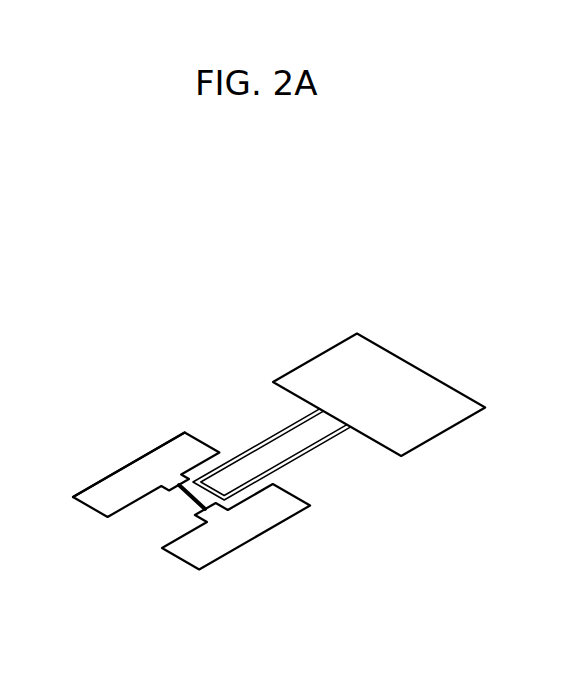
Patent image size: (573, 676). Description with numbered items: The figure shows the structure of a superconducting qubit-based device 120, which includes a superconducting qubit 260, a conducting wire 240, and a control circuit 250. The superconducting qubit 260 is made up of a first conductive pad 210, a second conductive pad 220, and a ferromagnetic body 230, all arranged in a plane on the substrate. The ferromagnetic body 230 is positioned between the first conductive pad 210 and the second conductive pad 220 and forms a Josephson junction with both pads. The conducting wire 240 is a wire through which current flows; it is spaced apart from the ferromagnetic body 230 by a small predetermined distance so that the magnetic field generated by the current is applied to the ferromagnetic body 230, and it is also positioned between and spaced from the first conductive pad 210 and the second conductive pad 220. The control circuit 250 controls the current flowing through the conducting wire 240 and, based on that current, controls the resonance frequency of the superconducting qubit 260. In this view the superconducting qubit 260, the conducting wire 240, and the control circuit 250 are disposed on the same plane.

The superconducting qubit-based device 120 is at (70, 319).
The first conductive pad 210 is at (100, 506).
The second conductive pad 220 is at (233, 540).
The ferromagnetic body 230 is at (184, 497).
The conducting wire 240 is at (209, 492).
The control circuit 250 is at (432, 425).
The superconducting qubit 260 is at (163, 438).